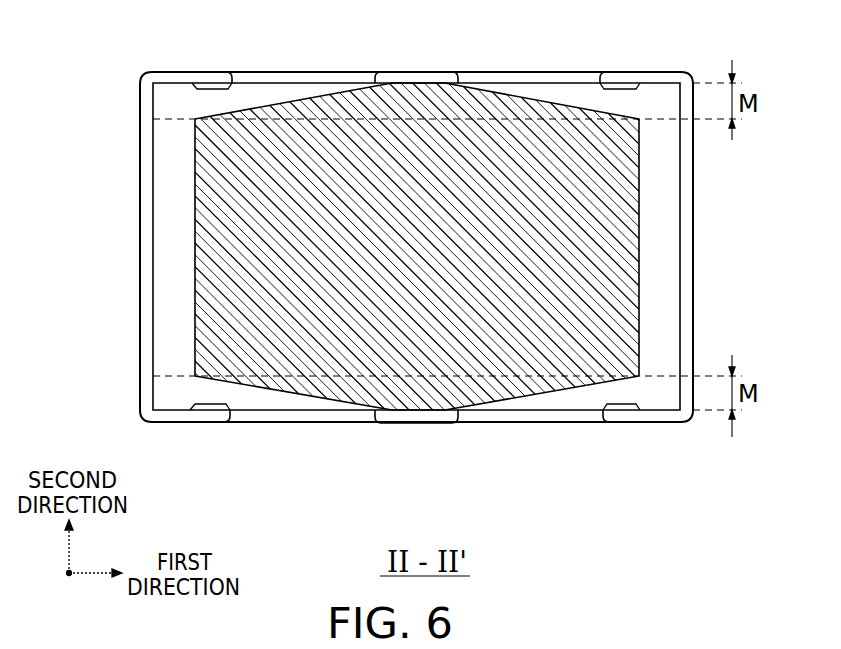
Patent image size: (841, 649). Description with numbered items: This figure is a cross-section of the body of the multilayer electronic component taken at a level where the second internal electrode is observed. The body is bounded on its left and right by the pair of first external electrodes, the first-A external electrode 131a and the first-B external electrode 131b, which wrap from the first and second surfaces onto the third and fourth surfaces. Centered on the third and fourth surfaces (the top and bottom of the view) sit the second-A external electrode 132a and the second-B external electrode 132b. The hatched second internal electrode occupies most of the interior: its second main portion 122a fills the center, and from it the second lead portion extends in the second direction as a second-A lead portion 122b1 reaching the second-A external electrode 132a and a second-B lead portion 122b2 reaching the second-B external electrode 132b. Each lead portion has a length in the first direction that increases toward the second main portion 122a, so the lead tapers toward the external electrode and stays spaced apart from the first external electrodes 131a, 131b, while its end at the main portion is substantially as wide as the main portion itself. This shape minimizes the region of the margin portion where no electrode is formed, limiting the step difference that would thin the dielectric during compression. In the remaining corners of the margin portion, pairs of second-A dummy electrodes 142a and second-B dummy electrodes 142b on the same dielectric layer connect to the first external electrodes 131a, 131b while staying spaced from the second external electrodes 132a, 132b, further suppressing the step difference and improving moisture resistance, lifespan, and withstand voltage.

The first-A external electrode 131a is at (172, 80).
The first-B external electrode 131b is at (670, 82).
The second main portion 122a is at (205, 268).
The second-A lead portion 122b1 is at (338, 103).
The second-B lead portion 122b2 is at (343, 392).
The second-A external electrode 132a is at (435, 80).
The second-B external electrode 132b is at (440, 423).
The second-A dummy electrodes 142a is at (200, 83).
The second-B dummy electrodes 142b is at (202, 413).